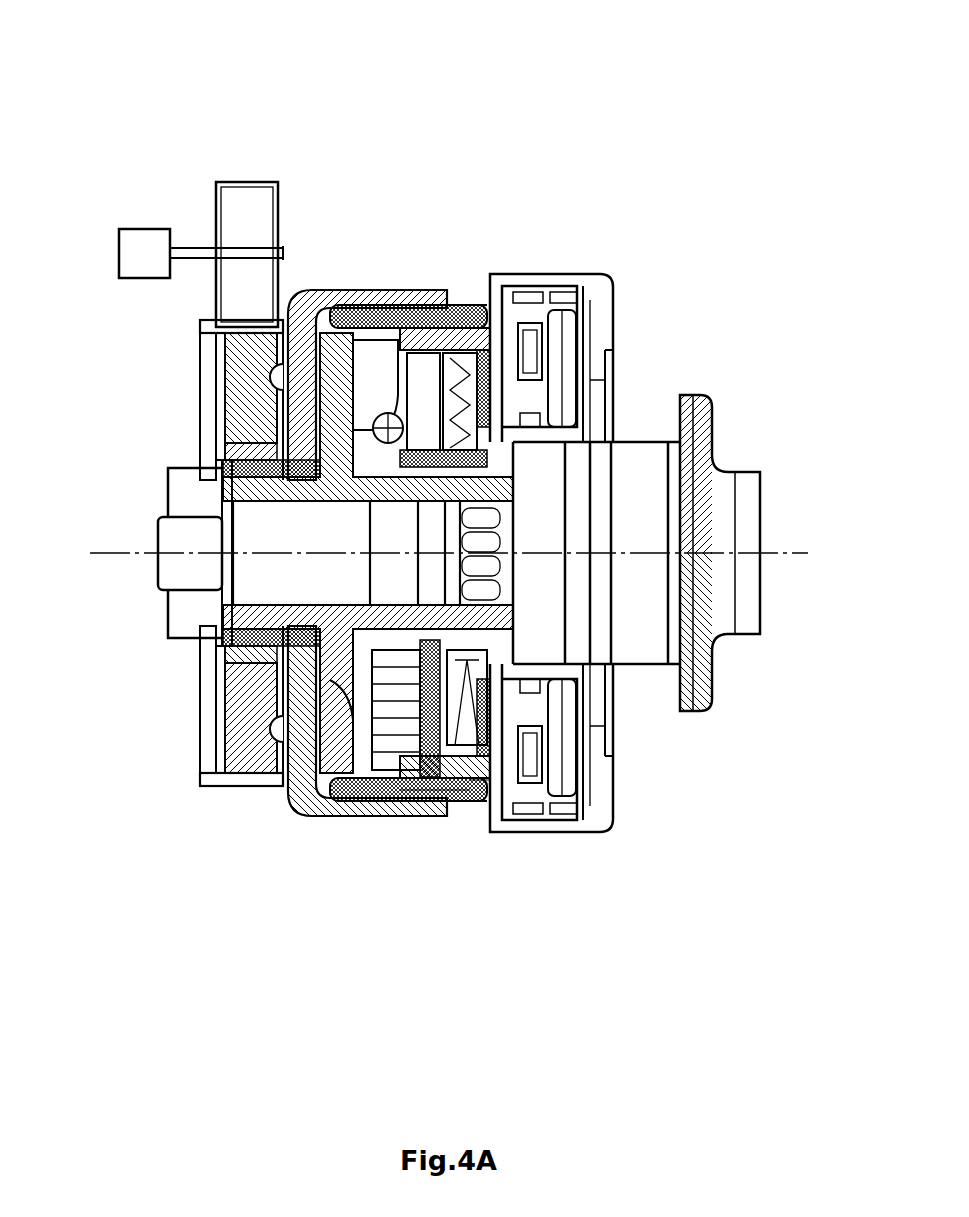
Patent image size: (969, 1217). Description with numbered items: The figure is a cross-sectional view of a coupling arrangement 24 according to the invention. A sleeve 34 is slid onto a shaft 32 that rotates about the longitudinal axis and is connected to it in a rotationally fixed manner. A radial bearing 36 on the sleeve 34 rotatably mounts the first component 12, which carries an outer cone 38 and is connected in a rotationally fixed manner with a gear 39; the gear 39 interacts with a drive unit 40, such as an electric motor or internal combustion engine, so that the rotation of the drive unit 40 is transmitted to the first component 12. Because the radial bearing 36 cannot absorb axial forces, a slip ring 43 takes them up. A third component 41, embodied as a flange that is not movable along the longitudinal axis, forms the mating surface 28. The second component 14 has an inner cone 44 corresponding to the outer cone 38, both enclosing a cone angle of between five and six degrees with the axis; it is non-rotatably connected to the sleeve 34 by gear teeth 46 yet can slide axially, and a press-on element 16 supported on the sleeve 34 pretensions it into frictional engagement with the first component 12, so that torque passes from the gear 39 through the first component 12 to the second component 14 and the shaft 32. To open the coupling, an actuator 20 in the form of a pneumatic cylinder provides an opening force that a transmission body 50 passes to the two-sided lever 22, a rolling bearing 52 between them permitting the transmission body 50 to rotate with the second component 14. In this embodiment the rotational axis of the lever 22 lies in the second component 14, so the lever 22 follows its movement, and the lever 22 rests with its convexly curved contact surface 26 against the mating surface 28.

The first component 12 is at (318, 292).
The second component 14 is at (445, 330).
The press-on element 16 is at (465, 795).
The actuator 20 is at (560, 278).
The lever 22 is at (400, 305).
The coupling arrangement 24 is at (185, 541).
The contact surface 26 is at (368, 290).
The mating surface 28 is at (313, 487).
The shaft 32 is at (740, 480).
The sleeve 34 is at (220, 396).
The radial bearing 36 is at (208, 406).
The outer cone 38 is at (390, 305).
The gear 39 is at (210, 423).
The drive unit 40 is at (160, 267).
The third component 41 is at (298, 295).
The slip ring 43 is at (310, 765).
The inner cone 44 is at (470, 303).
The gear teeth 46 is at (333, 603).
The transmission body 50 is at (478, 790).
The rolling bearing 52 is at (600, 775).